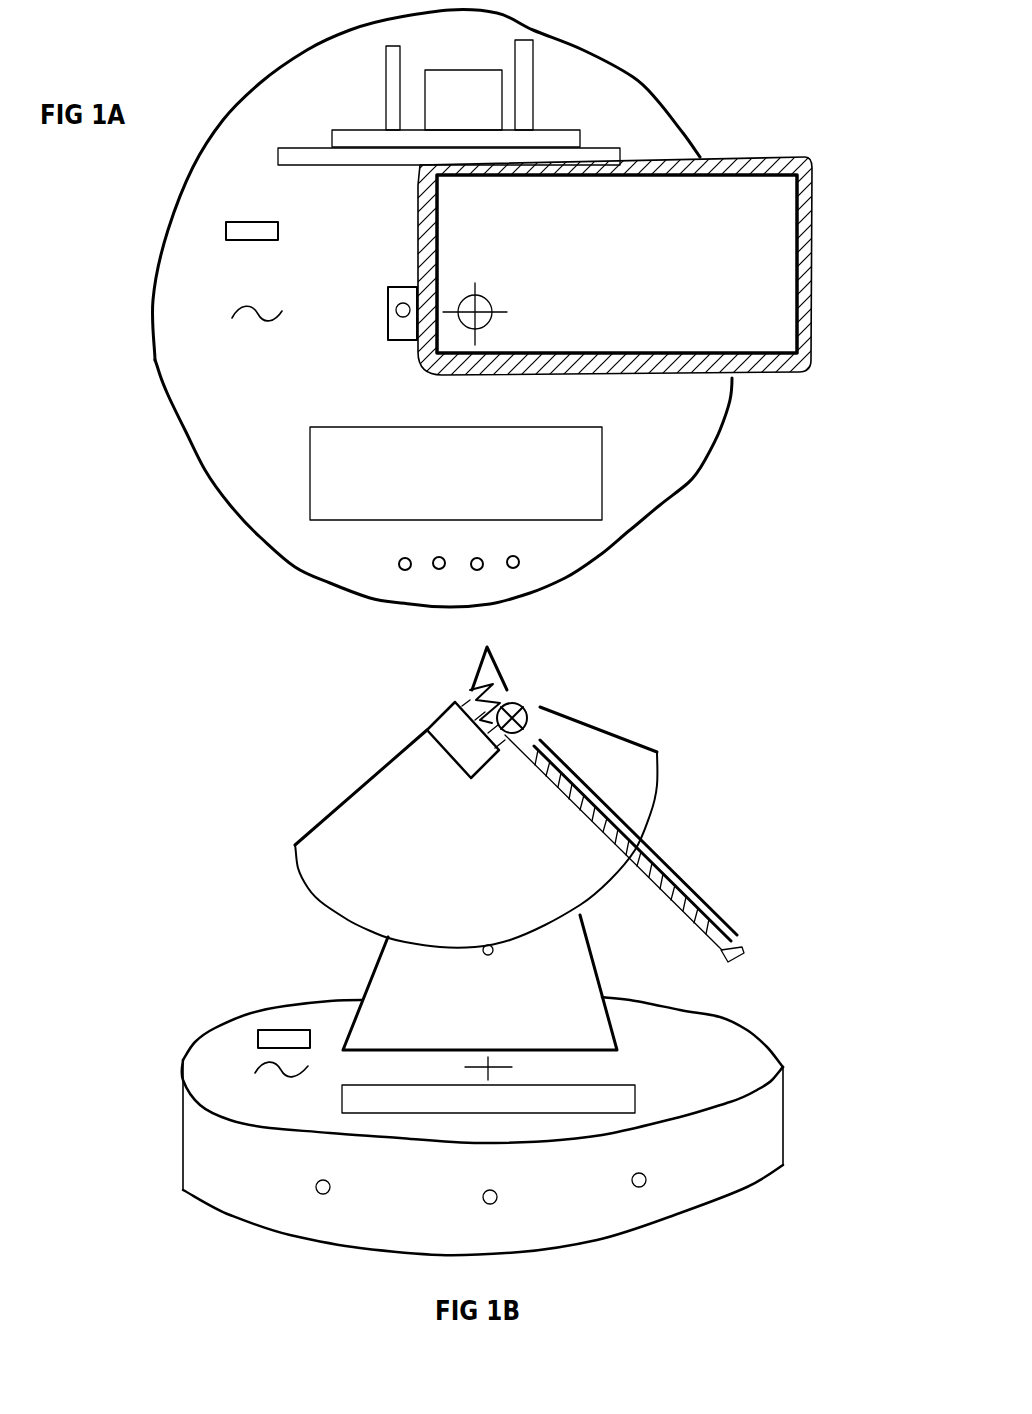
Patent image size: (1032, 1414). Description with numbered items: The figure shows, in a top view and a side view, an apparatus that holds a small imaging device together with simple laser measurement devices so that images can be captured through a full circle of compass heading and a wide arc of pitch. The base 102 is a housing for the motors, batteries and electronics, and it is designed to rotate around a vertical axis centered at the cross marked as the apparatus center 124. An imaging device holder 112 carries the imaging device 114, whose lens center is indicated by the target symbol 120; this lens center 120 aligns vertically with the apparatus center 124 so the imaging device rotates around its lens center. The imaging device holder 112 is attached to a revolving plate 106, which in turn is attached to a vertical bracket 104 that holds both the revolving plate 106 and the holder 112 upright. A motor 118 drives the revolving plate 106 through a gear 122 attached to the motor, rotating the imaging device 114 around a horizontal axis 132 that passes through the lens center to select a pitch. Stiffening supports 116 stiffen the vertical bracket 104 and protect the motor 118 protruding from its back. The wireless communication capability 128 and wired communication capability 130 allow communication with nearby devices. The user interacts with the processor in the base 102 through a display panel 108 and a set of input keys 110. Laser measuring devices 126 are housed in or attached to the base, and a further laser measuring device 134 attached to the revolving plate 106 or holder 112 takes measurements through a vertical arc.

In FIG. 1A, the base 102 is at (156, 362).
In FIG. 1B, the base 102 is at (288, 1001).
In FIG. 1A, the vertical bracket 104 is at (337, 128).
In FIG. 1B, the vertical bracket 104 is at (368, 974).
In FIG. 1A, the revolving plate 106 is at (300, 170).
In FIG. 1B, the revolving plate 106 is at (318, 798).
In FIG. 1A, the display panel 108 is at (340, 526).
In FIG. 1B, the display panel 108 is at (438, 1088).
In FIG. 1A, the input keys 110 is at (447, 570).
In FIG. 1A, the imaging device holder 112 is at (619, 386).
In FIG. 1B, the imaging device holder 112 is at (585, 792).
In FIG. 1A, the imaging device 114 is at (671, 313).
In FIG. 1B, the imaging device 114 is at (672, 854).
In FIG. 1A, the stiffening supports 116 is at (503, 117).
In FIG. 1A, the motor 118 is at (464, 65).
In FIG. 1A, the lens center 120 is at (487, 303).
In FIG. 1B, the gear 122 is at (494, 953).
In FIG. 1B, the apparatus center 124 is at (515, 1067).
In FIG. 1B, the laser measuring devices 126 is at (332, 1192).
In FIG. 1A, the wireless communication capability 128 is at (224, 309).
In FIG. 1B, the wireless communication capability 128 is at (243, 1071).
In FIG. 1A, the wired communication capability 130 is at (224, 233).
In FIG. 1B, the wired communication capability 130 is at (252, 1044).
In FIG. 1B, the horizontal axis 132 is at (537, 695).
In FIG. 1A, the laser measuring device 134 is at (397, 344).
In FIG. 1B, the laser measuring device 134 is at (432, 714).